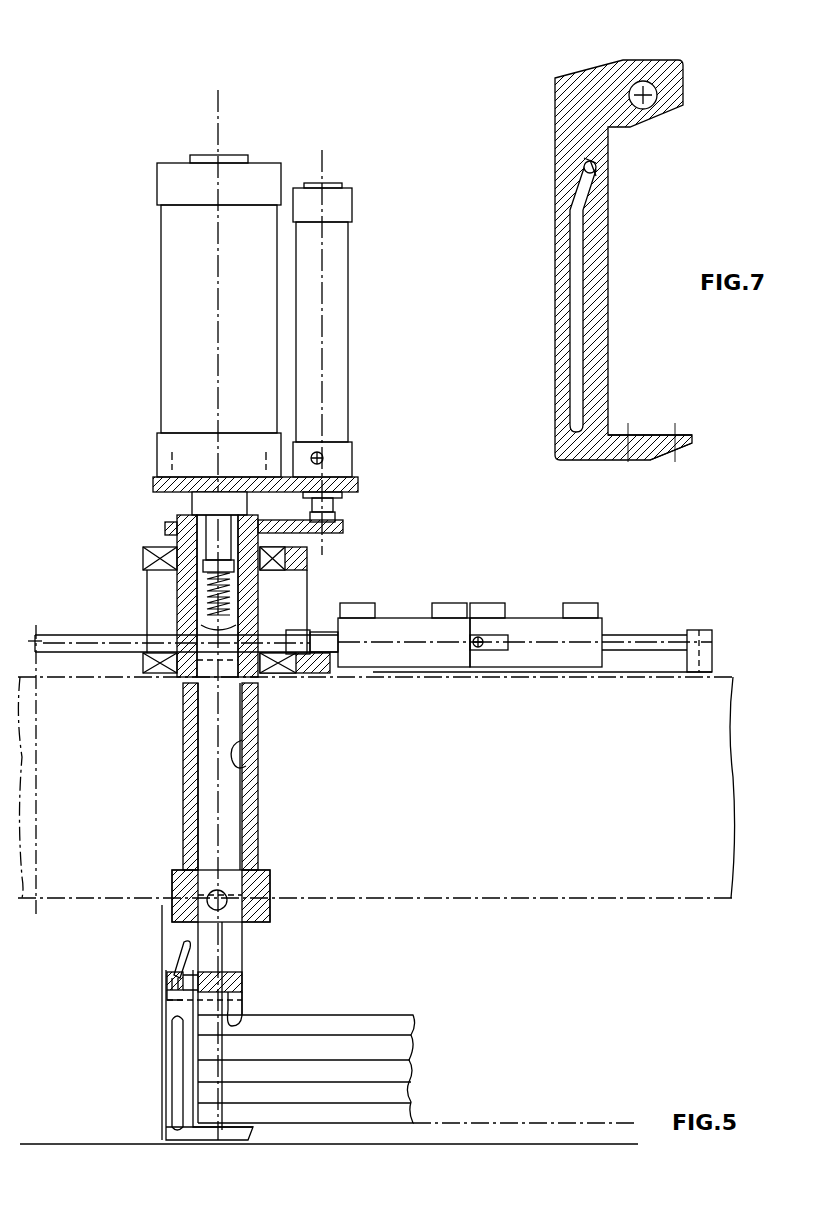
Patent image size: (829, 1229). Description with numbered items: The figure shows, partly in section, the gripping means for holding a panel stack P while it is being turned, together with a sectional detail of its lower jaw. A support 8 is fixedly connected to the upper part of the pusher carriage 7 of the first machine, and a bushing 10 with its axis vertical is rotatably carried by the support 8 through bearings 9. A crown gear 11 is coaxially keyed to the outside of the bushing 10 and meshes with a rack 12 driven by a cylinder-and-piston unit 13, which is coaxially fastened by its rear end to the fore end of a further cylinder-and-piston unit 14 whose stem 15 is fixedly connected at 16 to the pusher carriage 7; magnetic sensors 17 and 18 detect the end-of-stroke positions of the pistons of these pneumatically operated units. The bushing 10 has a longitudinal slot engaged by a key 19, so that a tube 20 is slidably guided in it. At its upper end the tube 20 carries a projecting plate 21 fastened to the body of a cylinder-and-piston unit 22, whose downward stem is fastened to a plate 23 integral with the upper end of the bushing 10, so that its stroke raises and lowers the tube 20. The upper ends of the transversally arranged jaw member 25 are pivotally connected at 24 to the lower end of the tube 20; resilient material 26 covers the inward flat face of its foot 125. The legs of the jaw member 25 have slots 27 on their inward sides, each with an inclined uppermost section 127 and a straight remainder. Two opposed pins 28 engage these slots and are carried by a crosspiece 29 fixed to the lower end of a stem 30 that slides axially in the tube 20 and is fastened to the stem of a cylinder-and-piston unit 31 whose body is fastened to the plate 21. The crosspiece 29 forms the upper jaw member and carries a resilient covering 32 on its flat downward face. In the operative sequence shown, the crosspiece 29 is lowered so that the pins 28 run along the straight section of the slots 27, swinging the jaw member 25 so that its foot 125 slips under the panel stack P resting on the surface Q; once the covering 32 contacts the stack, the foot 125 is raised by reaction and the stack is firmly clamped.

In FIG. 5, the pusher carriage 7 is at (722, 686).
In FIG. 5, the support 8 is at (142, 558).
In FIG. 5, the bearings 9 is at (165, 545).
In FIG. 5, the bushing 10 is at (176, 600).
In FIG. 5, the crown gear 11 is at (290, 628).
In FIG. 5, the rack 12 is at (318, 630).
In FIG. 5, the cylinder-and-piston unit 13 is at (404, 655).
In FIG. 5, the further cylinder-and-piston unit 14 is at (546, 655).
In FIG. 5, the stem 15 is at (648, 637).
In FIG. 5, the connection point 16 is at (705, 630).
In FIG. 5, the magnetic sensors 17 is at (436, 603).
In FIG. 5, the magnetic sensors 18 is at (566, 603).
In FIG. 5, the key 19 is at (258, 717).
In FIG. 5, the tube 20 is at (196, 787).
In FIG. 5, the projecting plate 21 is at (358, 478).
In FIG. 5, the cylinder-and-piston unit 22 is at (347, 262).
In FIG. 5, the plate 23 is at (345, 522).
In FIG. 5, the pivot 24 is at (228, 896).
In FIG. 7, the pivot 24 is at (650, 82).
In FIG. 5, the jaw member 25 is at (164, 1060).
In FIG. 7, the jaw member 25 is at (552, 108).
In FIG. 7, the resilient material 26 is at (652, 432).
In FIG. 7, the slots 27 is at (600, 233).
In FIG. 5, the pins 28 is at (172, 978).
In FIG. 7, the pins 28 is at (586, 160).
In FIG. 5, the crosspiece 29 is at (244, 1000).
In FIG. 5, the stem 30 is at (245, 951).
In FIG. 5, the cylinder-and-piston unit 31 is at (166, 248).
In FIG. 5, the covering 32 is at (242, 1022).
In FIG. 5, the foot 125 is at (220, 1135).
In FIG. 7, the foot 125 is at (650, 458).
In FIG. 5, the inclined uppermost section 127 is at (184, 950).
In FIG. 7, the inclined uppermost section 127 is at (598, 170).
In FIG. 5, the panel stack P is at (375, 1010).
In FIG. 5, the ground Q is at (461, 1122).